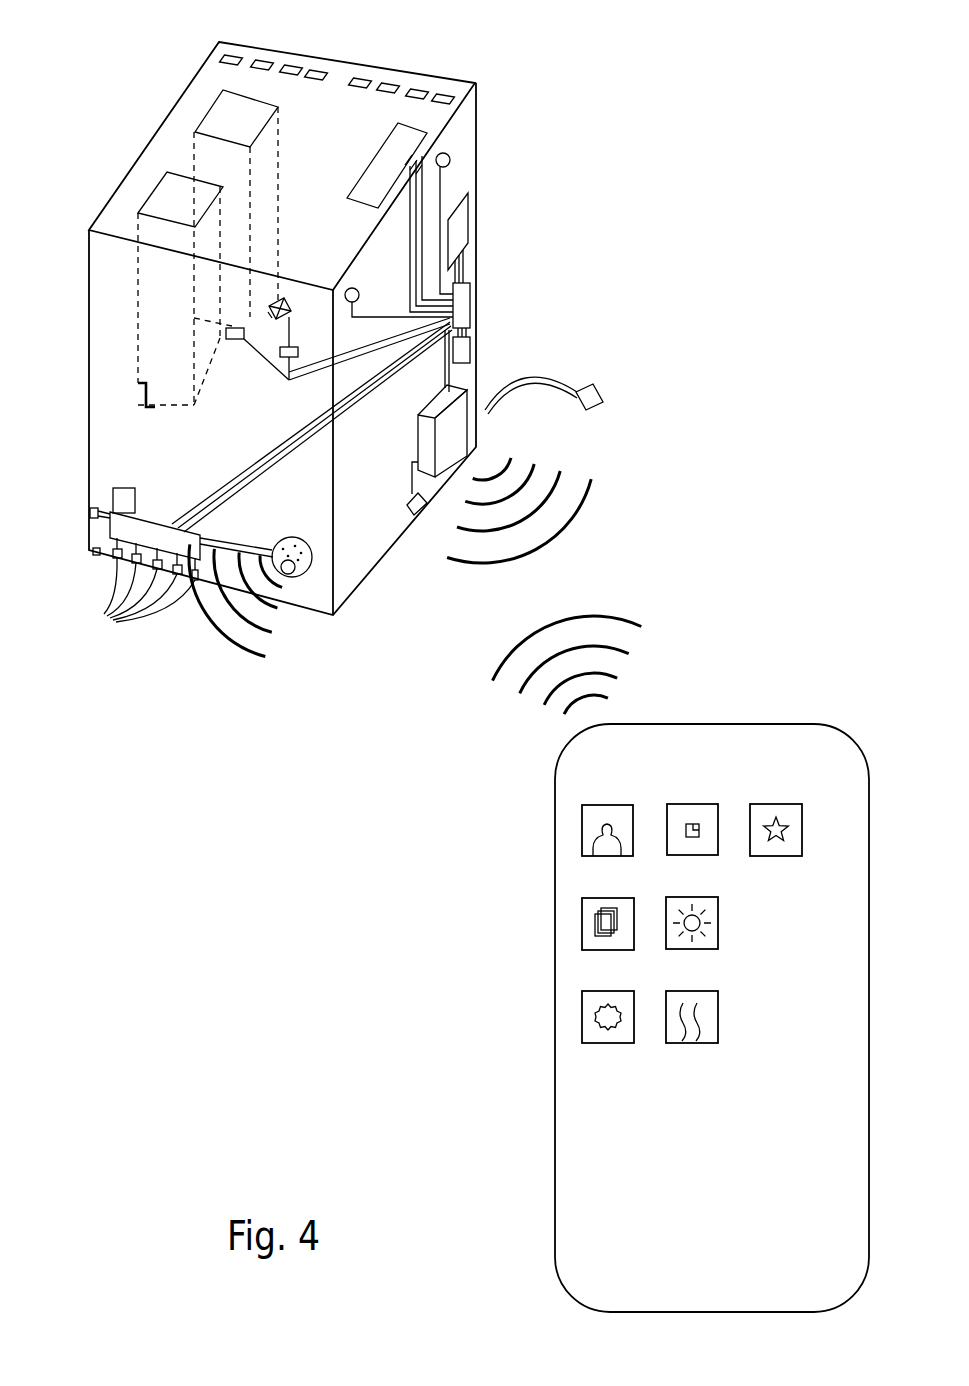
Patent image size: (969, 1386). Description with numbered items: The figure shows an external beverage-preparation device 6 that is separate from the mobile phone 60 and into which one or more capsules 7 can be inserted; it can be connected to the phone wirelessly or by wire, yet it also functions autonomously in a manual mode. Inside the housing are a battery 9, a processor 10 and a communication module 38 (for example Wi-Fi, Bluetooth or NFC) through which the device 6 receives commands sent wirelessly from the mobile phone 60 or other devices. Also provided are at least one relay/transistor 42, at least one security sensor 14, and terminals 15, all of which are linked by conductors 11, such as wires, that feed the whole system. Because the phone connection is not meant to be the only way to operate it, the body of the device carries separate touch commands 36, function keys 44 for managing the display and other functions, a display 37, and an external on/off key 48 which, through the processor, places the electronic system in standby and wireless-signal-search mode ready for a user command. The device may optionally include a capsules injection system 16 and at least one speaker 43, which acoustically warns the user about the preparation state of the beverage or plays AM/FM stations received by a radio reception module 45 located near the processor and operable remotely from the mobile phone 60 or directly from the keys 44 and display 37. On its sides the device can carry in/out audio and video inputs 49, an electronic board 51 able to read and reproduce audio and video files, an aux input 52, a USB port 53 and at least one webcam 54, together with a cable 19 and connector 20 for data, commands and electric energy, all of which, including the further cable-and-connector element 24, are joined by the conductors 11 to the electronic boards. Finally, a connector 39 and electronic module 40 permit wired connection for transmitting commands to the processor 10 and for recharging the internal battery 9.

The device 6 is at (375, 572).
The capsules 7 is at (222, 112).
The battery 9 is at (456, 432).
The processor 10 is at (472, 306).
The conductors 11 is at (385, 315).
The security sensor 14 is at (268, 312).
The terminals 15 is at (271, 304).
The capsules injection system 16 is at (137, 405).
The cable 19 is at (555, 383).
The connector 20 is at (601, 403).
The cable and connector 24 is at (212, 623).
The touch commands 36 is at (234, 56).
The display 37 is at (412, 137).
The communication module 38 is at (472, 350).
The connector 39 is at (421, 513).
The electronic module 40 is at (125, 488).
The relay/transistor 42 is at (297, 347).
The speaker 43 is at (289, 572).
The commands 44 is at (359, 80).
The radio reception module 45 is at (461, 227).
The external key 48 is at (451, 161).
The in/out audio and video inputs 49 is at (141, 592).
The electronic board 51 is at (113, 537).
The aux input 52 is at (93, 553).
The USB port 53 is at (90, 512).
The Webcam 54 is at (343, 290).
The mobile phone 60 is at (572, 1165).